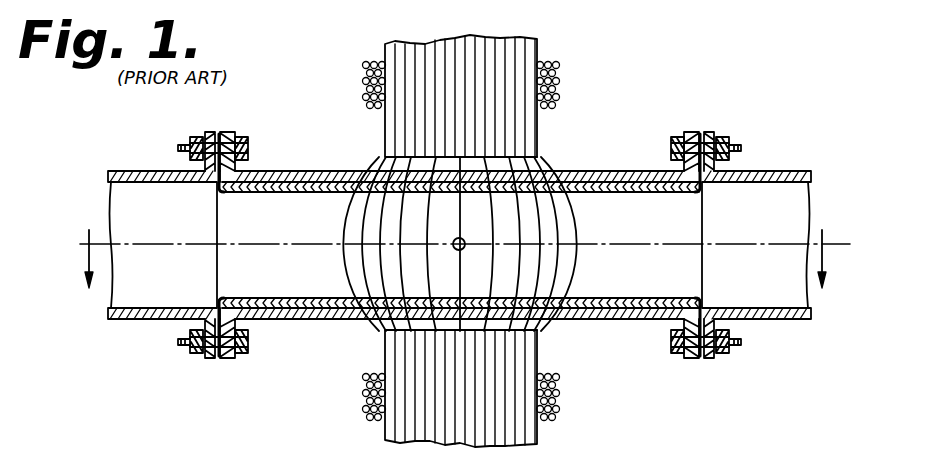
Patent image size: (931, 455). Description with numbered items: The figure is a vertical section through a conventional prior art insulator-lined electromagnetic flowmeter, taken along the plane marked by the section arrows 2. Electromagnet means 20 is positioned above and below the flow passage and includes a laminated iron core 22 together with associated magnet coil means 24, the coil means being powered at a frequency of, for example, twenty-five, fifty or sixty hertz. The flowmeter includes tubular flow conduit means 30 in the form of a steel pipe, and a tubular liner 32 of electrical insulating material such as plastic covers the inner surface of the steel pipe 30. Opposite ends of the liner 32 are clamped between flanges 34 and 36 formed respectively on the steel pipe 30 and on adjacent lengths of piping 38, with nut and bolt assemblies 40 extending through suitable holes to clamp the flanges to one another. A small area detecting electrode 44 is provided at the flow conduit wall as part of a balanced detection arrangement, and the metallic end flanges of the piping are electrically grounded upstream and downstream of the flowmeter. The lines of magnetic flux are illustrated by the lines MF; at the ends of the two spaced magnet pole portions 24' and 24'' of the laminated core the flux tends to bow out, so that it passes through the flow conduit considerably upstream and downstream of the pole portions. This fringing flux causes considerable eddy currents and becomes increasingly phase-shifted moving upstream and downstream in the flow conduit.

The section line 2- 2 is at (459, 260).
The electromagnet means 20 is at (467, 227).
The laminated iron core 22 is at (481, 37).
The magnet coil means 24 is at (488, 235).
The magnet pole portion 24' is at (547, 149).
The magnet pole portion 24'' is at (550, 345).
The tubular flow conduit means 30 is at (326, 170).
The tubular liner 32 is at (303, 192).
The flange 34 is at (240, 137).
The flange 36 is at (195, 136).
The length of piping 38 is at (121, 170).
The nut and bolt assembly 40 is at (251, 156).
The detecting electrode 44 is at (462, 250).
The lines of magnetic flux MF is at (578, 237).